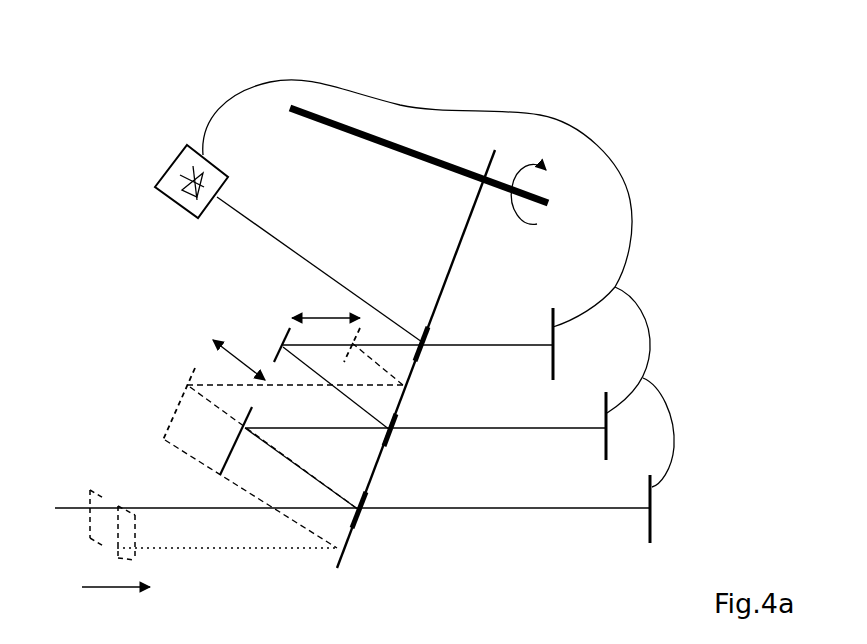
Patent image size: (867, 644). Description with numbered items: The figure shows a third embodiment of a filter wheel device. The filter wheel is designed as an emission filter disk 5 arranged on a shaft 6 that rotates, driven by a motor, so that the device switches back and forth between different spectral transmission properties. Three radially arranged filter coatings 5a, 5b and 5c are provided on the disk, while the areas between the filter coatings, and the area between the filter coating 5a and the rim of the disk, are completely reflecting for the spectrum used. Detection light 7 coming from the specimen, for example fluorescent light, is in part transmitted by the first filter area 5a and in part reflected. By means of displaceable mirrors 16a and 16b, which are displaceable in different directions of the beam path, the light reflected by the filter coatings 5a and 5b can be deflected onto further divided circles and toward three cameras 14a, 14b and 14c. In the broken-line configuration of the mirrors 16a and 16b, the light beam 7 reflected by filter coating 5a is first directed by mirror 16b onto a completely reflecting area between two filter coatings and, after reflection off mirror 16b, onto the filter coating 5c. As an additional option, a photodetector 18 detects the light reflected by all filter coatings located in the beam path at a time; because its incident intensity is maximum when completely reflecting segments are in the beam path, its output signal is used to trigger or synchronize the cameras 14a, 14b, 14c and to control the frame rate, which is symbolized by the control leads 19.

The emission filter disk 5 is at (500, 153).
The first filter area 5a is at (357, 510).
The filter coating 5b is at (382, 422).
The filter coating 5c is at (419, 336).
The shaft 6 is at (357, 128).
The detection light 7 is at (213, 510).
The camera 14a is at (651, 538).
The camera 14b is at (606, 458).
The camera 14c is at (553, 380).
The displaceable mirror 16a is at (182, 398).
The displaceable mirror 16b is at (288, 336).
The photodetector 18 is at (168, 204).
The control leads 19 is at (664, 399).